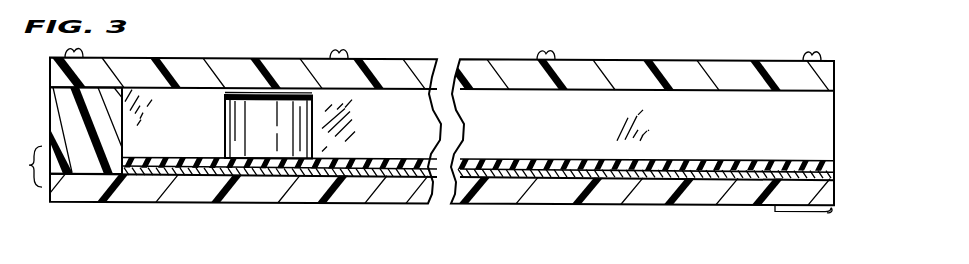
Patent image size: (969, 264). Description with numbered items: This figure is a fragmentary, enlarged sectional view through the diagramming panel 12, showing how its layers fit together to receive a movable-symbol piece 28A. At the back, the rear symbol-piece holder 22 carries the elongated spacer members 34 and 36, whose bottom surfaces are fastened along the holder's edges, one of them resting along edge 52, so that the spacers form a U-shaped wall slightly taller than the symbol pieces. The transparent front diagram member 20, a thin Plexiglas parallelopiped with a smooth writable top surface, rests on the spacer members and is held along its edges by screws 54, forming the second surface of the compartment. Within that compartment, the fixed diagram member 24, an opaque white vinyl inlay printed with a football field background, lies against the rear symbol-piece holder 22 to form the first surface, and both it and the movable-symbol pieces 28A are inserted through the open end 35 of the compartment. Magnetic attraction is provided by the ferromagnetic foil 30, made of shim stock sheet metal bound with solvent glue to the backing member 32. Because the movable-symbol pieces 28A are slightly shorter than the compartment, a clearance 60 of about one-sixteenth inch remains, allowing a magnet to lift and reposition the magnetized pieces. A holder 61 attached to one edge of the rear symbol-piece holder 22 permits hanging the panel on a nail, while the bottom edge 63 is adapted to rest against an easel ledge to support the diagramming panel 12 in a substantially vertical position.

The diagramming panel 12 is at (688, 43).
The transparent front diagram member 20 is at (836, 68).
The rear symbol-piece holder 22 is at (22, 166).
The fixed diagram member 24 is at (836, 163).
The movable-symbol piece 28A is at (312, 136).
The ferromagnetic foil 30 is at (836, 170).
The backing member 32 is at (836, 188).
The elongated spacer member 34 is at (536, 136).
The open end 35 is at (828, 119).
The elongated spacer member 36 is at (50, 70).
The edge of the rear symbol-piece holder 52 is at (50, 126).
The screws 54 is at (338, 54).
The clearance 60 is at (310, 91).
The holder 61 is at (826, 214).
The bottom edge 63 is at (50, 188).